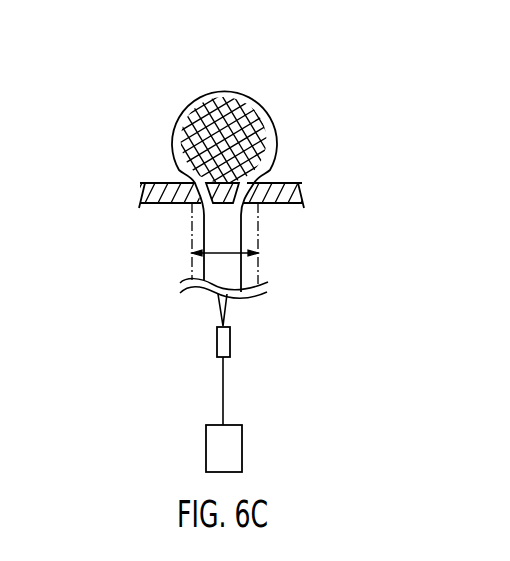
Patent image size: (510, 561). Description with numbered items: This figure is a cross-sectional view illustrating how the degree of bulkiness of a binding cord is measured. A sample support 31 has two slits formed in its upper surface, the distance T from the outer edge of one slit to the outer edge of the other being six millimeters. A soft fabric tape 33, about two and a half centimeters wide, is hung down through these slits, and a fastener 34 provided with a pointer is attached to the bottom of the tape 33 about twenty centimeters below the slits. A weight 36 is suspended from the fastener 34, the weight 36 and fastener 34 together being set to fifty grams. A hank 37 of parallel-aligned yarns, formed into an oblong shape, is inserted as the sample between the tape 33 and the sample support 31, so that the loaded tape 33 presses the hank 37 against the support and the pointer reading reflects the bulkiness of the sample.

The sample support 31 is at (280, 183).
The soft fabric tape 33 is at (244, 91).
The hank 37 is at (193, 142).
The fastener 34 is at (230, 342).
The weight 36 is at (238, 448).
The distance between slit outer edges T is at (228, 251).